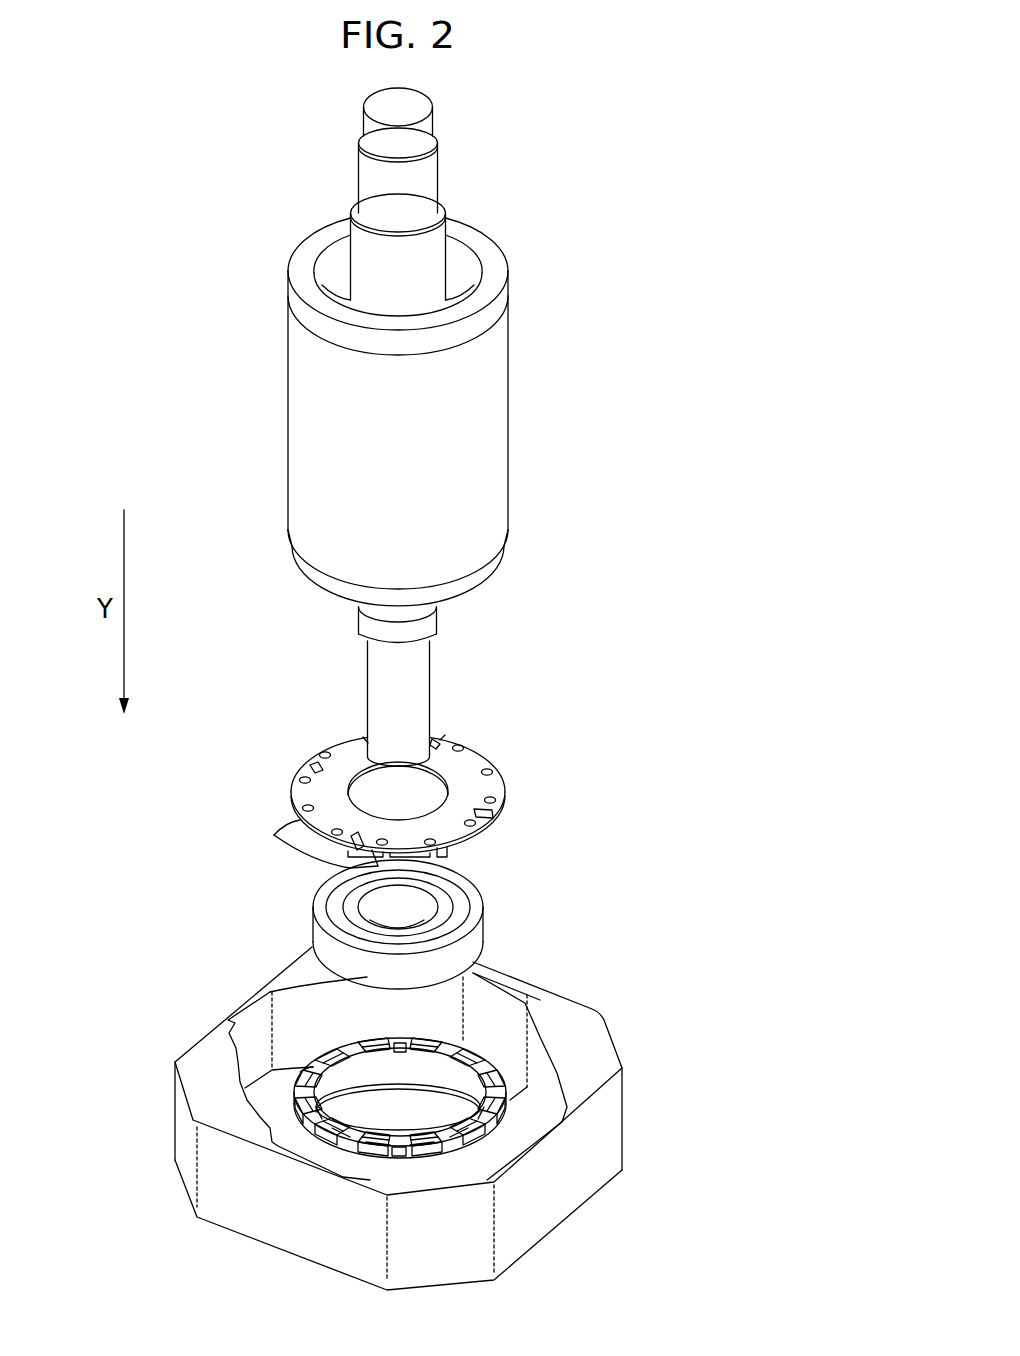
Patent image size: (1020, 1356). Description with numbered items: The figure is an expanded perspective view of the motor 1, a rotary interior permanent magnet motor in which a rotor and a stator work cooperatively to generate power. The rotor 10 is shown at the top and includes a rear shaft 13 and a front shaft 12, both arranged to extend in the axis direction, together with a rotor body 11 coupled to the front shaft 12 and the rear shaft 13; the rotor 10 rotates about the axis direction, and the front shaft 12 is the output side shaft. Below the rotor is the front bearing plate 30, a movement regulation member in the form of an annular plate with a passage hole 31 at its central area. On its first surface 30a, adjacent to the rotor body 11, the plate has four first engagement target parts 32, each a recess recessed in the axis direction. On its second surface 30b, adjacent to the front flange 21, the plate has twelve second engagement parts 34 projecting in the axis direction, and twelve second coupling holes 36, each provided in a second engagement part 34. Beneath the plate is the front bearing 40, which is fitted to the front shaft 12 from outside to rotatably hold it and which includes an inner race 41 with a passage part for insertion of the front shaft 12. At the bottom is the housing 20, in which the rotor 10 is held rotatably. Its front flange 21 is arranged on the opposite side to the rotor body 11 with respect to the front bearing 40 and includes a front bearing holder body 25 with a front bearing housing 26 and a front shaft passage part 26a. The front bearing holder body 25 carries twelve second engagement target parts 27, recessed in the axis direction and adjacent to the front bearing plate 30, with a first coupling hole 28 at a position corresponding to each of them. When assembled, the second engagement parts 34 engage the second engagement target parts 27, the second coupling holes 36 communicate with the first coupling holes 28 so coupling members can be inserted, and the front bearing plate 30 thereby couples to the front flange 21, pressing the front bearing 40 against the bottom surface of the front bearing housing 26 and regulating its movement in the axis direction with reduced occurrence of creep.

The motor 1 is at (693, 122).
The rotor 10 is at (567, 358).
The rotor body 11 is at (508, 438).
The front shaft 12 is at (430, 678).
The rear shaft 13 is at (437, 163).
The housing 20 is at (722, 1023).
The front flange 21 is at (639, 1096).
The front bearing holder body 25 is at (512, 1100).
The front bearing housing 26 is at (455, 1080).
The front shaft passage part 26a is at (445, 1115).
The second engagement target part 27 is at (373, 1138).
The first coupling hole 28 is at (398, 1114).
The front bearing plate 30 is at (519, 780).
The first surface 30a is at (477, 758).
The second surface 30b is at (490, 823).
The passage hole 31 is at (370, 783).
The first engagement target part 32 is at (312, 765).
The second engagement part 34 is at (275, 835).
The second coupling hole 36 is at (302, 777).
The front bearing 40 is at (500, 914).
The inner race 41 is at (382, 903).